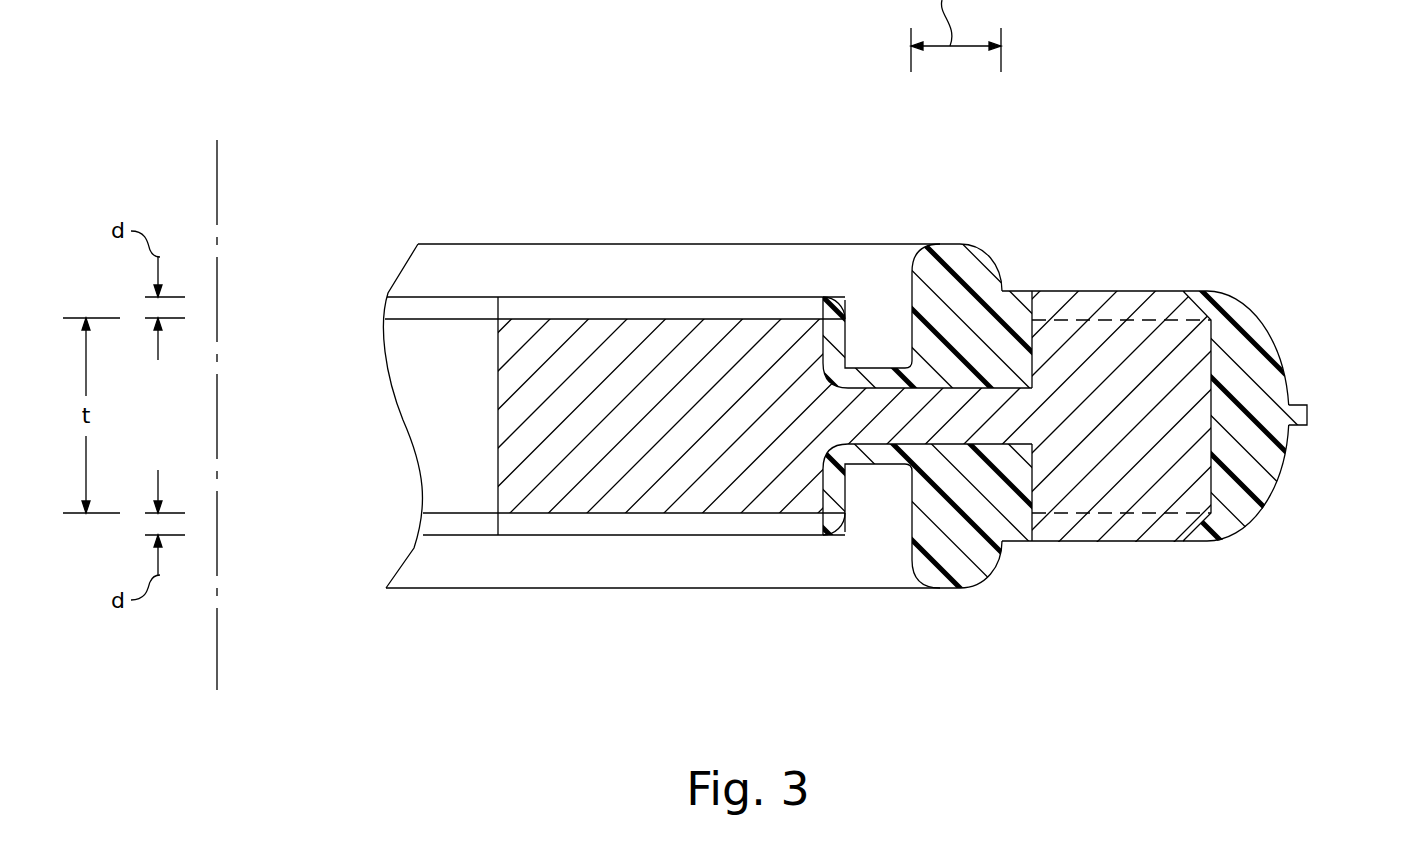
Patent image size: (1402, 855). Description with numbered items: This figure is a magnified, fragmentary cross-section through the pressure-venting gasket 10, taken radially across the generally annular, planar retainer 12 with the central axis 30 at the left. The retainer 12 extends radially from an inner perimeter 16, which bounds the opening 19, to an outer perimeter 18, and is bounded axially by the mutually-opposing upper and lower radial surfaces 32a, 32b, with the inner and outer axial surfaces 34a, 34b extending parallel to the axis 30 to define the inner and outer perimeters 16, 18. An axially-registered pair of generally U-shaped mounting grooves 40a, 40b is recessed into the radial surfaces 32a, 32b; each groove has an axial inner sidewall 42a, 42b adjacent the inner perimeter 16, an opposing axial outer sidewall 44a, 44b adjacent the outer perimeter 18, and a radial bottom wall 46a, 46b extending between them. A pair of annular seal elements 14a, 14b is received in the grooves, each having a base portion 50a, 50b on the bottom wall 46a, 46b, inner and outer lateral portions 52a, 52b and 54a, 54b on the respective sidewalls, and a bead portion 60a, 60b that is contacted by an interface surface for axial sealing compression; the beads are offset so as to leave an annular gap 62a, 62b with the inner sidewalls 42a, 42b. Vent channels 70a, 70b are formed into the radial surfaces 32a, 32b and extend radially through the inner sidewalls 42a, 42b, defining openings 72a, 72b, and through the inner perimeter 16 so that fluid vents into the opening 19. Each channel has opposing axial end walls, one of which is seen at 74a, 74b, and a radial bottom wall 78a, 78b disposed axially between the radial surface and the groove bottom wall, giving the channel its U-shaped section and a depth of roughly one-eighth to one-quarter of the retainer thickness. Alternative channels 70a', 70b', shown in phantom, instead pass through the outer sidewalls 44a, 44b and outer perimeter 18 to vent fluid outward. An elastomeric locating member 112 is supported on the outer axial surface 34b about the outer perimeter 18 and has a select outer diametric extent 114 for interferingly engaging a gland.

The pressure-venting gasket 10 is at (1213, 147).
The retainer 12 is at (405, 432).
The seal element 14a is at (396, 276).
The seal element 14b is at (410, 556).
The inner perimeter 16 is at (587, 320).
The outer perimeter 18 is at (1217, 505).
The opening 19 is at (236, 440).
The central axis 30 is at (218, 676).
The upper radial surface 32a is at (552, 297).
The lower radial surface 32b is at (556, 537).
The inner axial surface 34a is at (587, 318).
The outer axial surface 34b is at (1217, 443).
The mounting groove 40a is at (886, 263).
The mounting groove 40b is at (880, 548).
The axial inner sidewall 42a is at (832, 318).
The axial inner sidewall 42b is at (838, 537).
The axial outer sidewall 44a is at (1032, 290).
The axial outer sidewall 44b is at (1030, 543).
The radial bottom wall 46a is at (1006, 290).
The radial bottom wall 46b is at (1005, 543).
The base portion 50a is at (902, 367).
The base portion 50b is at (897, 467).
The inner lateral portion 52a is at (831, 297).
The inner lateral portion 52b is at (843, 540).
The outer lateral portion 54a is at (1030, 291).
The outer lateral portion 54b is at (1033, 543).
The bead portion 60a is at (1003, 388).
The bead portion 60b is at (997, 543).
The annular gap 62a is at (852, 312).
The annular gap 62b is at (852, 494).
The channel 70a is at (689, 235).
The channel 70b is at (673, 613).
The channel 70a' is at (1189, 254).
The channel 70b' is at (1183, 569).
The opening 72a is at (857, 267).
The opening 72b is at (857, 548).
The axial end wall 74a is at (745, 300).
The axial end wall 74b is at (725, 550).
The radial bottom wall 78a is at (525, 318).
The radial bottom wall 78b is at (519, 513).
The locating member 112 is at (1246, 297).
The outer diametric extent 114 is at (1287, 358).